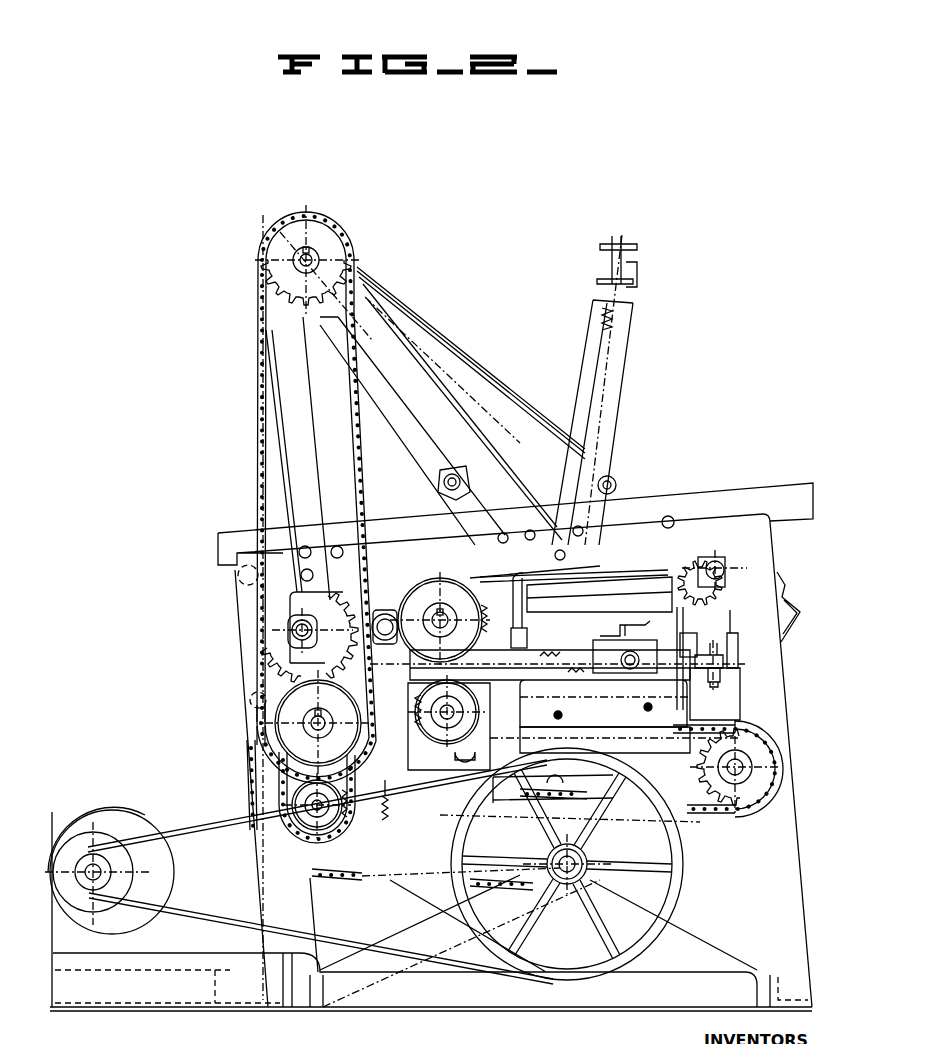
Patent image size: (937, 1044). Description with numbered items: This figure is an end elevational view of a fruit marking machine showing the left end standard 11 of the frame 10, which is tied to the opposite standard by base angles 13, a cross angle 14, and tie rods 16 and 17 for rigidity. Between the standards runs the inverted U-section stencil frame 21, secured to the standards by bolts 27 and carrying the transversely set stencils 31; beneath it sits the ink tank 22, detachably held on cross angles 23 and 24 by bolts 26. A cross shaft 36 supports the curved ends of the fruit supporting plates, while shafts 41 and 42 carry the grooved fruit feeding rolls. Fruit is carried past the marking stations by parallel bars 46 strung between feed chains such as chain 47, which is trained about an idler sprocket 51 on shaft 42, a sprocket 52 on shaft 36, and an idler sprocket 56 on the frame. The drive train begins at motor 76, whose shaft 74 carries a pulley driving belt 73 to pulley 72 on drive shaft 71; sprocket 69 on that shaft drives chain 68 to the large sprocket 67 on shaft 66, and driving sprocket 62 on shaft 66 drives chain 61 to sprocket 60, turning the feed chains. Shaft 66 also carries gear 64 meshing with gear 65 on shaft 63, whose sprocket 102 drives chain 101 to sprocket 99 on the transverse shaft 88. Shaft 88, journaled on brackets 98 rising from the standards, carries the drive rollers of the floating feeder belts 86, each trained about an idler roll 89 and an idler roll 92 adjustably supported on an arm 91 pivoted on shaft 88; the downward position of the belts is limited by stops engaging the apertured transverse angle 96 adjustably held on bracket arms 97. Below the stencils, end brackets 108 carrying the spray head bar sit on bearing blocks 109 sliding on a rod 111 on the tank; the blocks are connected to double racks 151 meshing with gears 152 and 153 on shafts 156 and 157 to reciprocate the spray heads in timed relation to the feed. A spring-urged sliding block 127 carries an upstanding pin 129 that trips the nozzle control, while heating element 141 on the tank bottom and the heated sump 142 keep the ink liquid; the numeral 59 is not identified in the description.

The frame 10 is at (805, 791).
The end standard 11 is at (268, 890).
The base angles 13 is at (800, 1000).
The cross angle 14 is at (797, 622).
The tie rod 16 is at (257, 700).
The tie rod 17 is at (240, 583).
The stencil frame 21 is at (612, 603).
The tank 22 is at (684, 618).
The cross angle 23 is at (486, 652).
The cross angle 24 is at (733, 662).
The bolts 26 is at (712, 688).
The bolts 27 is at (649, 574).
The stencils 31 is at (570, 585).
The cross shaft 36 is at (721, 568).
The shaft 41 is at (384, 606).
The shaft 42 is at (290, 630).
The bars 46 is at (556, 788).
The chain 47 is at (579, 797).
The idler sprocket 51 is at (343, 598).
The sprocket 52 is at (700, 572).
The idler sprocket 56 is at (492, 742).
The shaft 59 is at (740, 766).
The sprocket 60 is at (776, 757).
The chain 61 is at (700, 830).
The driving sprocket 62 is at (347, 834).
The shaft 63 is at (314, 716).
The gear 64 is at (300, 784).
The gear 65 is at (262, 734).
The shaft 66 is at (300, 830).
The large sprocket 67 is at (390, 822).
The chain 68 is at (348, 876).
The sprocket 69 is at (585, 848).
The drive shaft 71 is at (569, 892).
The pulley 72 is at (684, 877).
The belt 73 is at (175, 829).
The shaft 74 is at (91, 850).
The motor 76 is at (97, 795).
The belt 86 is at (478, 372).
The shaft 88 is at (300, 265).
The idler roll 89 is at (612, 486).
The arm 91 is at (447, 354).
The idler roll 92 is at (438, 487).
The apertured transverse angle 96 is at (634, 286).
The bracket arms 97 is at (623, 369).
The brackets 98 is at (286, 397).
The sprocket 99 is at (278, 288).
The chain 101 is at (262, 483).
The sprocket 102 is at (262, 715).
The end brackets 108 is at (602, 634).
The bearing block 109 is at (646, 674).
The rod 111 is at (705, 640).
The sliding block 127 is at (528, 640).
The upstanding pin 129 is at (513, 603).
The heating element 141 is at (548, 660).
The sump 142 is at (648, 757).
The double racks 151 is at (577, 676).
The gear 152 is at (416, 705).
The gear 153 is at (430, 586).
The shaft 156 is at (440, 714).
The shaft 157 is at (452, 612).